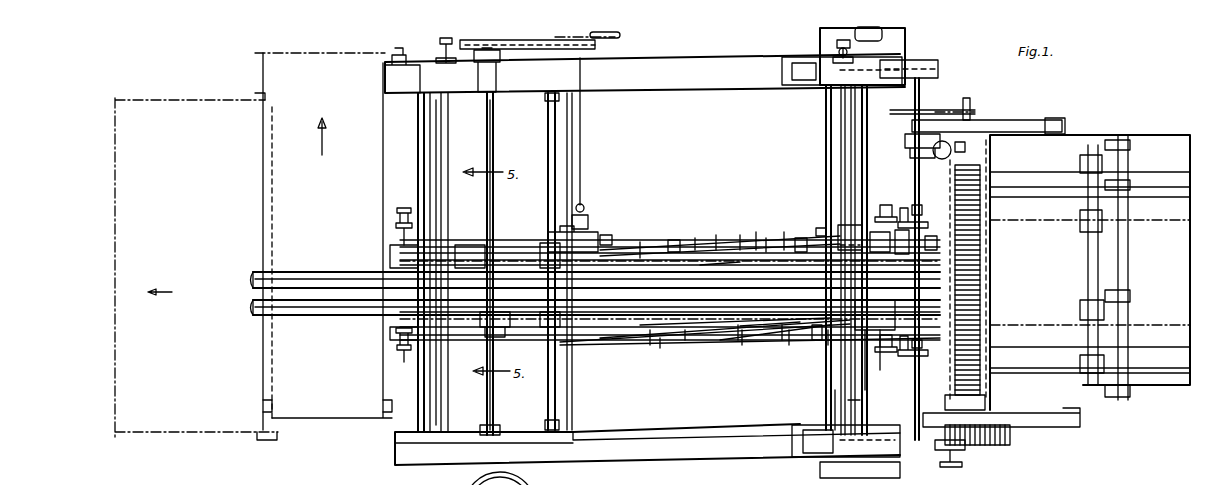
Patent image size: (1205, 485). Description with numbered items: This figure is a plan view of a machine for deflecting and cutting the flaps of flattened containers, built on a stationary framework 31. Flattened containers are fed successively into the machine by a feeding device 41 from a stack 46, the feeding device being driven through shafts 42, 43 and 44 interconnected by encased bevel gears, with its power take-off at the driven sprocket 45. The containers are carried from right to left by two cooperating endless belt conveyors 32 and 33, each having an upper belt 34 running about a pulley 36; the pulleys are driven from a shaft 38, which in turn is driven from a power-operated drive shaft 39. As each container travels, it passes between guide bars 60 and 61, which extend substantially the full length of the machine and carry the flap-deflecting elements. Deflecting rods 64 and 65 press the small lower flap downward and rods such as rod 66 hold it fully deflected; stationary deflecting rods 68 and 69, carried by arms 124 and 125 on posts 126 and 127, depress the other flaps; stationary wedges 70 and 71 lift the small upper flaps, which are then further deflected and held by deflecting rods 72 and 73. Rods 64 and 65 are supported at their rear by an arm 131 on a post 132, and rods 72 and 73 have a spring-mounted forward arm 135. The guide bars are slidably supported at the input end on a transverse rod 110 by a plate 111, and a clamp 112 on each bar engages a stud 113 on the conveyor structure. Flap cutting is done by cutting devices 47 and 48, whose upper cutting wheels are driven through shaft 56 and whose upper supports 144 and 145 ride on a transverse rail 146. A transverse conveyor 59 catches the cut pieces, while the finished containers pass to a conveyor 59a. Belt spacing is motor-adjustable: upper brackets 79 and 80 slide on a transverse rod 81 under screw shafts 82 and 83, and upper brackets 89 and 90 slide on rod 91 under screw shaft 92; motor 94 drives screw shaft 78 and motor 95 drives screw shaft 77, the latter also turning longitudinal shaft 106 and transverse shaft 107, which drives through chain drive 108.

The stationary framework 31 is at (745, 458).
The conveyor 32 is at (337, 271).
The conveyor 33 is at (348, 307).
The upper belt 34 is at (317, 307).
The pulley 36 is at (534, 242).
The shaft 38 is at (496, 86).
The power-operated drive shaft 39 is at (623, 37).
The feeding device 41 is at (1088, 413).
The shaft 42 is at (547, 146).
The shaft 43 is at (670, 240).
The shaft 44 is at (909, 153).
The driven sprocket 45 is at (948, 107).
The stack 46 is at (1054, 223).
The cutting device 47 is at (390, 246).
The cutting device 48 is at (394, 342).
The shaft 56 is at (418, 160).
The transverse conveyor 59 is at (351, 414).
The conveyor 59a is at (206, 419).
The guide bar 60 is at (618, 340).
The guide bar 61 is at (716, 235).
The deflecting rod 64 is at (756, 327).
The deflecting rod 65 is at (728, 250).
The rod 66 is at (702, 321).
The deflecting rod 68 is at (712, 246).
The deflecting rod 69 is at (788, 238).
The stationary wedge 70 is at (690, 335).
The stationary wedge 71 is at (694, 238).
The deflecting rod 72 is at (650, 340).
The deflecting rod 73 is at (609, 230).
The screw shaft 77 is at (837, 52).
The screw shaft 78 is at (905, 470).
The upper bracket 79 is at (865, 318).
The upper bracket 80 is at (850, 237).
The transverse rod 81 is at (848, 390).
The screw shaft 82 is at (868, 158).
The screw shaft 83 is at (828, 158).
The upper bracket 89 is at (535, 345).
The upper bracket 90 is at (462, 244).
The rod 91 is at (488, 135).
The screw shaft 92 is at (438, 120).
The motor 94 is at (823, 480).
The motor 95 is at (880, 40).
The longitudinal shaft 106 is at (648, 216).
The transverse shaft 107 is at (585, 138).
The chain drive 108 is at (442, 43).
The transverse rod 110 is at (920, 370).
The plate 111 is at (914, 206).
The clamp 112 is at (886, 204).
The stud 113 is at (900, 206).
The arm 124 is at (828, 343).
The arm 125 is at (784, 232).
The post 126 is at (816, 226).
The post 127 is at (766, 238).
The arm 131 is at (739, 235).
The post 132 is at (755, 230).
The arm 135 is at (639, 233).
The upper support 144 is at (410, 198).
The upper support 145 is at (408, 365).
The transverse rail 146 is at (448, 386).